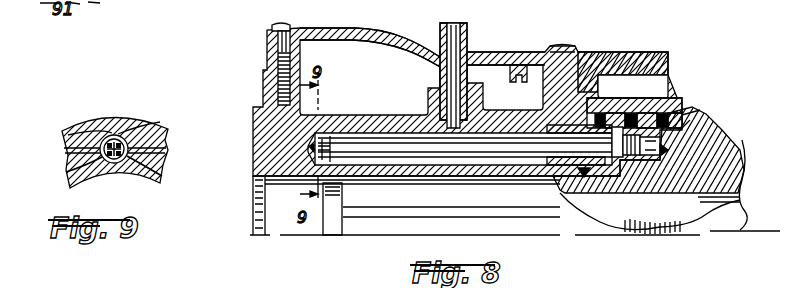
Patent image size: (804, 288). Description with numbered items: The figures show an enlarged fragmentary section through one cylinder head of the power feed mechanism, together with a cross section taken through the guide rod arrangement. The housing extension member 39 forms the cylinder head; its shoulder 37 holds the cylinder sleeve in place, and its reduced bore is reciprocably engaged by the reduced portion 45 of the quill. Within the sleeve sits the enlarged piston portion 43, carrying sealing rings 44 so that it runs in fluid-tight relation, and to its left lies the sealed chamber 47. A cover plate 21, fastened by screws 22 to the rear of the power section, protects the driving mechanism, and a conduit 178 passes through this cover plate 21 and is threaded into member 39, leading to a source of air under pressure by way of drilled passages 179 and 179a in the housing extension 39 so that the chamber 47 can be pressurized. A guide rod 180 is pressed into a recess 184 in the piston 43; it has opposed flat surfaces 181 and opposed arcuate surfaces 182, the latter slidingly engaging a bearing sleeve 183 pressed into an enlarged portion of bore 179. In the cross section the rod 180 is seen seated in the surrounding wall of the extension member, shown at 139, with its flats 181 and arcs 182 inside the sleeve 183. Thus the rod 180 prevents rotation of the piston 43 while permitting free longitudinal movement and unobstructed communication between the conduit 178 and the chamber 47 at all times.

In FIG. 9, the cylindrical wall segment 139 is at (74, 128).
In FIG. 9, the guide rod 180 is at (113, 135).
In FIG. 8, the guide rod 180 is at (450, 155).
In FIG. 9, the flat surfaces 181 is at (131, 136).
In FIG. 8, the flat surfaces 181 is at (367, 160).
In FIG. 9, the arcuate surfaces 182 is at (65, 150).
In FIG. 8, the arcuate surfaces 182 is at (404, 150).
In FIG. 9, the bearing sleeve 183 is at (152, 121).
In FIG. 8, the bearing sleeve 183 is at (534, 178).
In FIG. 9, the drilled passage 179 is at (68, 170).
In FIG. 8, the drilled passage 179 is at (497, 158).
In FIG. 8, the screw 22 is at (290, 26).
In FIG. 8, the conduit 178 is at (468, 27).
In FIG. 8, the cover plate 21 is at (505, 52).
In FIG. 8, the shoulder 37 is at (601, 53).
In FIG. 8, the sealing rings 44 is at (661, 112).
In FIG. 8, the piston portion 43 is at (683, 122).
In FIG. 8, the recess 184 is at (672, 140).
In FIG. 8, the housing extension member 39 is at (354, 116).
In FIG. 8, the drilled passage 179a is at (412, 110).
In FIG. 8, the chamber 47 is at (598, 198).
In FIG. 8, the reduced portion 45 is at (386, 228).